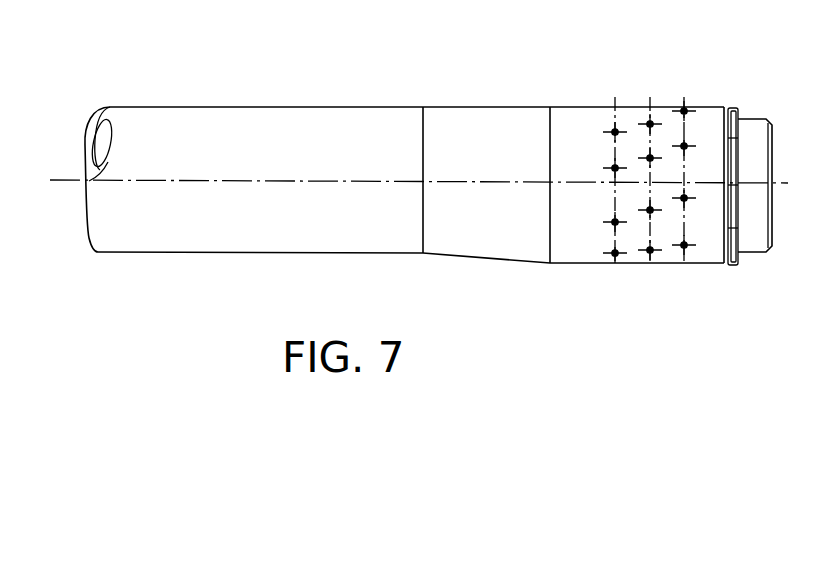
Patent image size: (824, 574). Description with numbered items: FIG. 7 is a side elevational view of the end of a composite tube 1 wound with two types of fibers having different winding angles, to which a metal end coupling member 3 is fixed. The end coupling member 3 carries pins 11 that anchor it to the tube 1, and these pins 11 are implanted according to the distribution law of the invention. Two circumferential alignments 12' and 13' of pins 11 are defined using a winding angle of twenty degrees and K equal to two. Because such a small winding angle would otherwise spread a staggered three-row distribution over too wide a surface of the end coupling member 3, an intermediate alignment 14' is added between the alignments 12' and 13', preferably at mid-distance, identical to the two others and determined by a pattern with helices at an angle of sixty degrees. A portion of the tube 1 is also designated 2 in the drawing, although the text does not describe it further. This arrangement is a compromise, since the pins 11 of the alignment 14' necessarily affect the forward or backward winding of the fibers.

The composite tube 1 is at (192, 256).
The tube section 2 is at (360, 180).
The metal end coupling member 3 is at (755, 262).
The pins 11 is at (682, 248).
The circumferential alignment 12' is at (600, 156).
The circumferential alignment 13' is at (716, 156).
The intermediate alignment 14' is at (662, 156).